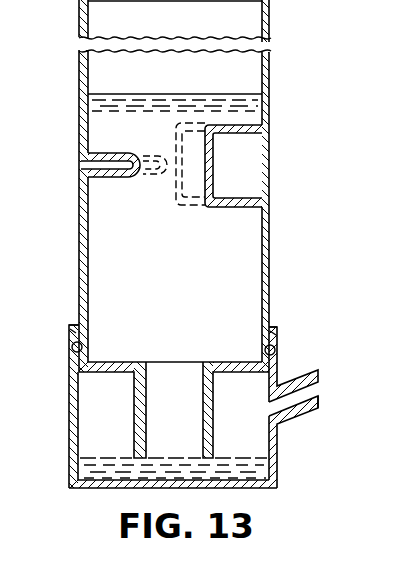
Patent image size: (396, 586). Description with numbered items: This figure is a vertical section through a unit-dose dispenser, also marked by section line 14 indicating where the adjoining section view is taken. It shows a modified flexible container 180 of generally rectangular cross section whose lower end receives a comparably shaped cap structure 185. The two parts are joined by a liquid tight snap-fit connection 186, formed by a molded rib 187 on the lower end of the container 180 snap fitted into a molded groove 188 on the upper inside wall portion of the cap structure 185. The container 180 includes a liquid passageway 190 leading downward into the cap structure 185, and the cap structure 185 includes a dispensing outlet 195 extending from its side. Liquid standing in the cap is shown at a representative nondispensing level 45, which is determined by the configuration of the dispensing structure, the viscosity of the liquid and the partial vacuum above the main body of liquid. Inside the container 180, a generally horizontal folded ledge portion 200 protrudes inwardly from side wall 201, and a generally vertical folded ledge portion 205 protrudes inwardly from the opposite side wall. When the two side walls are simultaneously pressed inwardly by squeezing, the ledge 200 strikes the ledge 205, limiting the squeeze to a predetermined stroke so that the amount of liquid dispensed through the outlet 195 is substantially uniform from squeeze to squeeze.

The section line 14- 14 is at (71, 77).
The level 45 is at (97, 458).
The flexible container 180 is at (270, 262).
The cap structure 185 is at (283, 377).
The snap-fit connection 186 is at (282, 328).
The molded rib 187 is at (76, 346).
The molded groove 188 is at (72, 340).
The liquid passageway 190 is at (213, 420).
The dispensing outlet 195 is at (307, 416).
The horizontal folded ledge portion 200 is at (120, 178).
The side wall 201 is at (88, 242).
The vertical folded ledge portion 205 is at (223, 207).